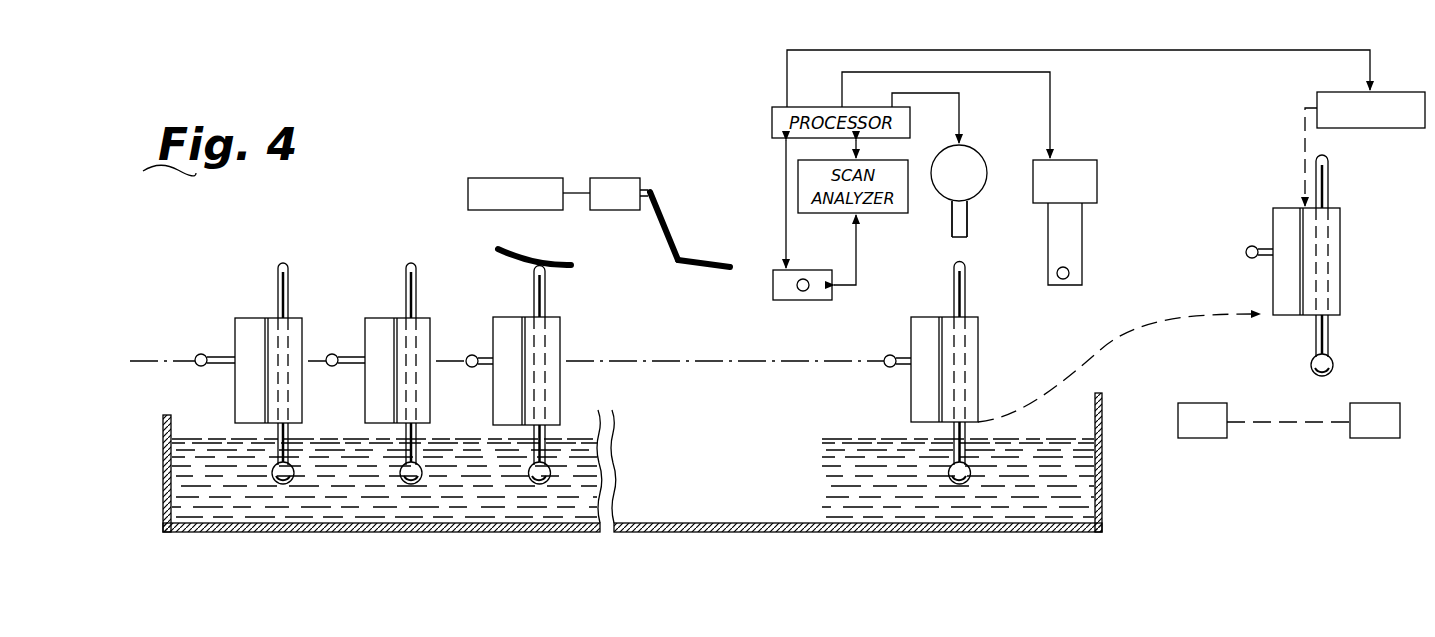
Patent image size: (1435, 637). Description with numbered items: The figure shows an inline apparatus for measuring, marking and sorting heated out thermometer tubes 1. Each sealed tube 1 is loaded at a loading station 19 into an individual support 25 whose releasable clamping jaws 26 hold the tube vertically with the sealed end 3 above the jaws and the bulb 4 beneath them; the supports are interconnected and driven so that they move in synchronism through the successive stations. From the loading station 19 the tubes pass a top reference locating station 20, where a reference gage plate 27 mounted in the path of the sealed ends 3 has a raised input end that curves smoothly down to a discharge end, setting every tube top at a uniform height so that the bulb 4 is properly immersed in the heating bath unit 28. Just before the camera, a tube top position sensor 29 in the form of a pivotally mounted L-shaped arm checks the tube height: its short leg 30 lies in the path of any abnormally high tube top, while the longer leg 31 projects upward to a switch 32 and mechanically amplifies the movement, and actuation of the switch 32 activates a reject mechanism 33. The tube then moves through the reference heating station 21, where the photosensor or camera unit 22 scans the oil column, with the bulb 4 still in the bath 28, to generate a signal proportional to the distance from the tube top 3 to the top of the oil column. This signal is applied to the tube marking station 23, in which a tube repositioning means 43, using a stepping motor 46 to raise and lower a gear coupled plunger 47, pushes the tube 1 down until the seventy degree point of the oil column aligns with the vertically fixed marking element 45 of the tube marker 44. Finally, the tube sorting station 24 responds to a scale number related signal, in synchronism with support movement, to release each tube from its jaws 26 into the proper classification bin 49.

The tube 1 is at (336, 390).
The sealed end 3 is at (277, 264).
The bulb 4 is at (273, 487).
The loading station 19 is at (302, 390).
The top reference locating station 20 is at (478, 302).
The reference heating station 21 is at (704, 351).
The photosensor station 22 is at (796, 301).
The tube marking station 23 is at (1034, 347).
The tube sorting station 24 is at (1301, 307).
The support 25 is at (258, 348).
The clamping jaws 26 is at (298, 334).
The reference gage plate 27 is at (538, 260).
The heating bath unit 28 is at (793, 436).
The tube top position sensor 29 is at (685, 228).
The short leg 30 is at (716, 261).
The long leg 31 is at (667, 232).
The switch 32 is at (608, 178).
The reject mechanism 33 is at (520, 178).
The tube repositioning means 43 is at (969, 230).
The tube marker 44 is at (1088, 159).
The marking element 45 is at (1069, 274).
The stepping motor 46 is at (981, 155).
The plunger 47 is at (965, 210).
The classification bin 49 is at (1227, 438).